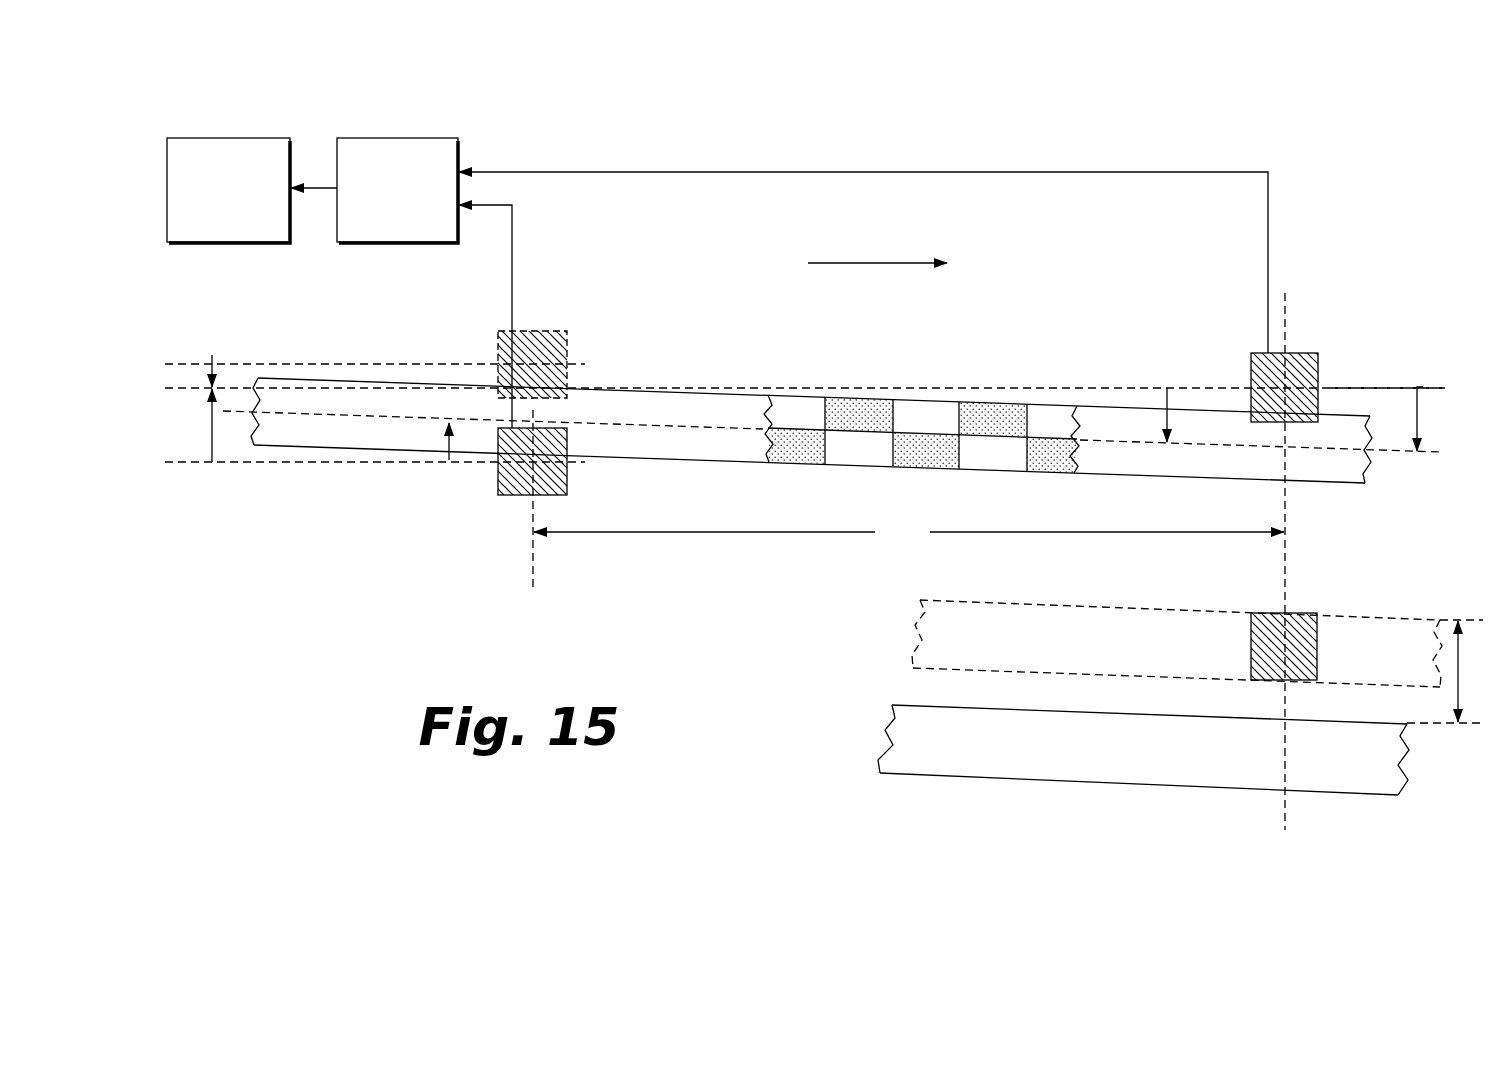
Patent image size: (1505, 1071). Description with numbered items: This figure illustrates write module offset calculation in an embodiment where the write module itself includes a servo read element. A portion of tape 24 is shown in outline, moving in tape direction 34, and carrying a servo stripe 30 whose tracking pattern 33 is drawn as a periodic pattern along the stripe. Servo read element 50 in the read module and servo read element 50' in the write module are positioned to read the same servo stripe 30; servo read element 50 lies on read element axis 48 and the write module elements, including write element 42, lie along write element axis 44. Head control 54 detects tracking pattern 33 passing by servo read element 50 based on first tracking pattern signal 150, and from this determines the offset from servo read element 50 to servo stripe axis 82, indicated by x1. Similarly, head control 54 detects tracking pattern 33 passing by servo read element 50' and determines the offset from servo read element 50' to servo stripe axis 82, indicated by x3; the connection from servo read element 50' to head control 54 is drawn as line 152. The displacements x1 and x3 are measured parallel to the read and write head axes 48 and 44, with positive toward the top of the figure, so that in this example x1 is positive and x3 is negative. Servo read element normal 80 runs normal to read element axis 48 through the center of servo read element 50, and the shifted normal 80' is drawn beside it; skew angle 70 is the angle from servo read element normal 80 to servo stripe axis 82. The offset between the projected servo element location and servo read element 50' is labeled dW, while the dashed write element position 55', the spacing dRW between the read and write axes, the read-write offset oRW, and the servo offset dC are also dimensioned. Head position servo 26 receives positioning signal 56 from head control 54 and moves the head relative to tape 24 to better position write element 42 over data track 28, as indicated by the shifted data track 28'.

The head position servo 26 is at (247, 138).
The head control 54 is at (410, 138).
The positioning signal 56 is at (316, 186).
The first tracking pattern signal 150 is at (512, 243).
The read element signal line 152 is at (1268, 220).
The tape 24 is at (1150, 238).
The servo stripe 30 is at (1103, 477).
The tracking pattern 33 is at (948, 366).
The tape direction 34 is at (890, 265).
The write element nominal position 55' is at (568, 338).
The servo read element 50 is at (503, 491).
The servo read element 50' is at (1307, 361).
The write element 42 is at (1303, 612).
The servo read element normal 80 is at (805, 443).
The shifted tape edge 80' is at (1387, 345).
The servo stripe axis 82 is at (1392, 452).
The skew angle 70 is at (1443, 419).
The read element axis 48 is at (533, 557).
The write element axis 44 is at (1293, 557).
The data track 28' is at (1177, 626).
The data track 28 is at (1143, 766).
The offset from projected servo element to servo read element dW is at (218, 359).
The read-write offset oRW is at (189, 425).
The offset from servo read element to servo stripe axis x1 is at (465, 440).
The offset from servo read element to servo stripe axis x3 is at (1183, 415).
The read-write spacing dRW is at (909, 534).
The servo offset dC is at (1449, 671).